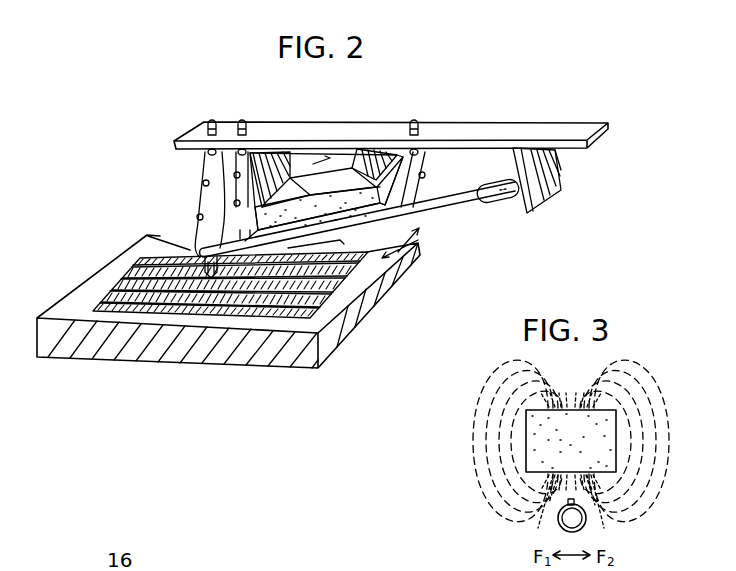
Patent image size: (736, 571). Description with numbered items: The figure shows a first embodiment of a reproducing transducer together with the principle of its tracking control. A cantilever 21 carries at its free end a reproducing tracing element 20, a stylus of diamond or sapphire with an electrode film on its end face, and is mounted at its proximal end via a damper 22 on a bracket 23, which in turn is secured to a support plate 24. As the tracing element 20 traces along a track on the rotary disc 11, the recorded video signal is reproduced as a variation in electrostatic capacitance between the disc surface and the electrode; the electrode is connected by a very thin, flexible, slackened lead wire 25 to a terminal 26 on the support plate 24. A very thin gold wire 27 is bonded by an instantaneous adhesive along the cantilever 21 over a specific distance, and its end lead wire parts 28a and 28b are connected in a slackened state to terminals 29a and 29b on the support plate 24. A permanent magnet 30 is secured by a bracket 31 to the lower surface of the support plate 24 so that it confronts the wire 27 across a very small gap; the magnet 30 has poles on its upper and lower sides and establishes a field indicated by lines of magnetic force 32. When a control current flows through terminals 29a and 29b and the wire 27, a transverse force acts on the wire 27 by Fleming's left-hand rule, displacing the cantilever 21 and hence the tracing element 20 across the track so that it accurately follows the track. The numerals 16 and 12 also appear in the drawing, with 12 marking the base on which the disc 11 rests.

In FIG. 2, the printing and detecting unit 16 is at (368, 90).
In FIG. 2, the support plate 24 is at (500, 122).
In FIG. 2, the terminal 26 is at (212, 121).
In FIG. 2, the terminal 29a is at (414, 121).
In FIG. 2, the terminal 29b is at (242, 121).
In FIG. 2, the lead wire 25 is at (204, 172).
In FIG. 2, the lead wire part 28a is at (421, 188).
In FIG. 2, the lead wire part 28b is at (233, 195).
In FIG. 2, the bracket 31 is at (343, 173).
In FIG. 2, the permanent magnet 30 is at (257, 212).
In FIG. 3, the permanent magnet 30 is at (526, 446).
In FIG. 2, the reproducing tracing element 20 is at (217, 243).
In FIG. 2, the cantilever 21 is at (455, 201).
In FIG. 3, the cantilever 21 is at (561, 529).
In FIG. 2, the damper 22 is at (500, 204).
In FIG. 2, the bracket 23 is at (547, 193).
In FIG. 2, the gold wire 27 is at (417, 242).
In FIG. 3, the gold wire 27 is at (575, 504).
In FIG. 2, the base 12 is at (386, 302).
In FIG. 2, the rotary disc 11 is at (122, 272).
In FIG. 3, the lines of magnetic force 32 is at (478, 400).